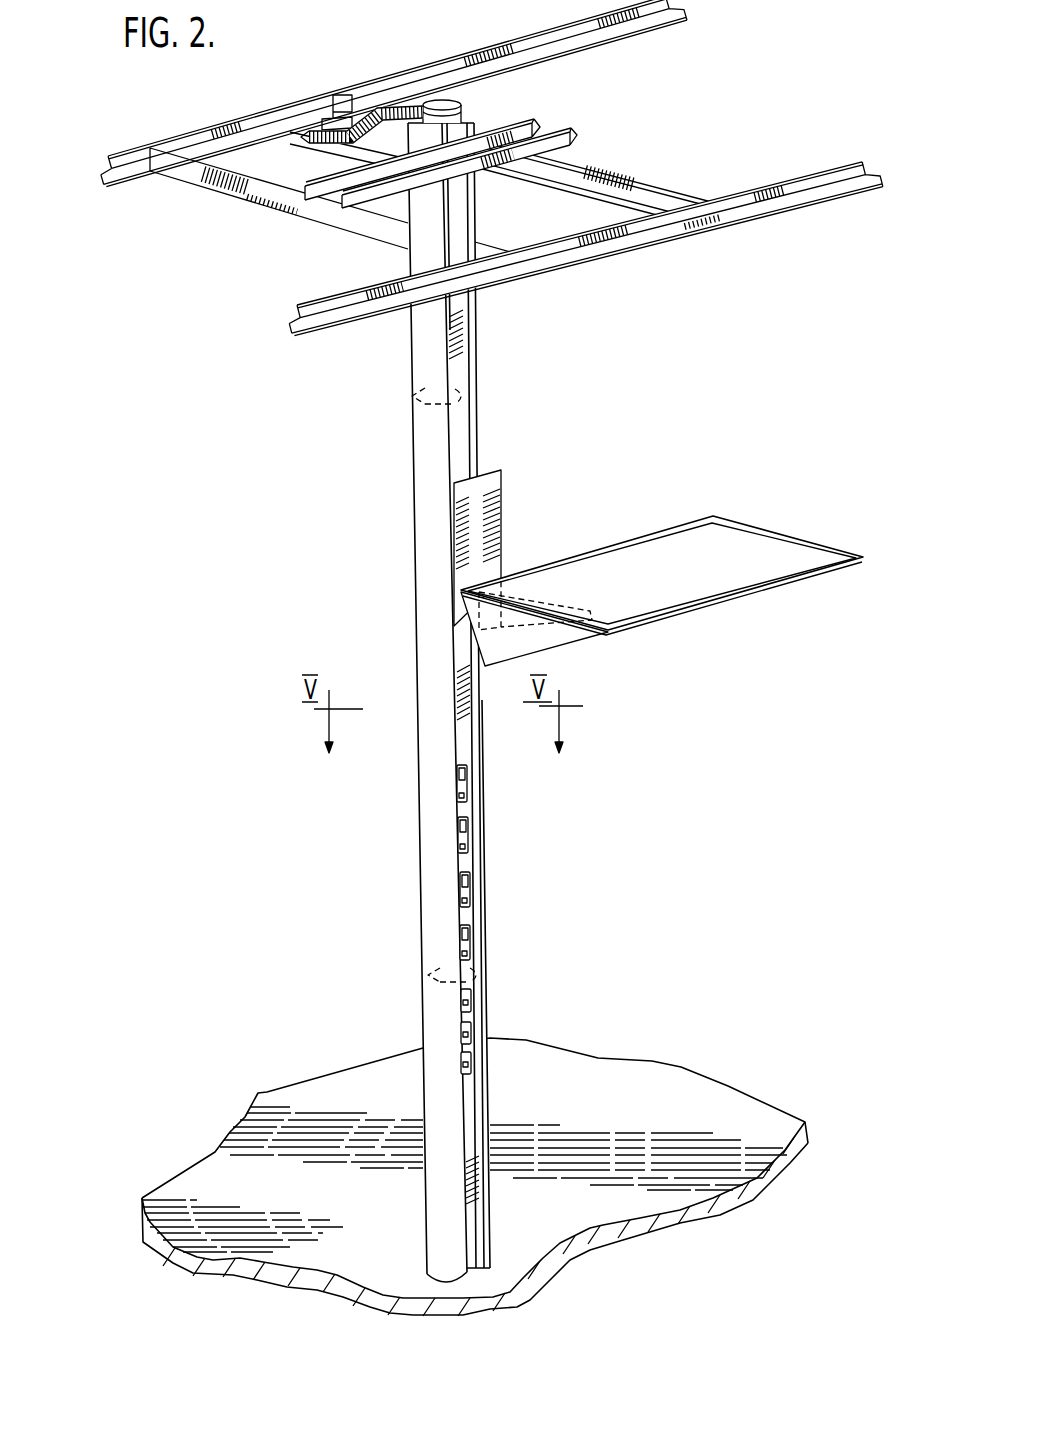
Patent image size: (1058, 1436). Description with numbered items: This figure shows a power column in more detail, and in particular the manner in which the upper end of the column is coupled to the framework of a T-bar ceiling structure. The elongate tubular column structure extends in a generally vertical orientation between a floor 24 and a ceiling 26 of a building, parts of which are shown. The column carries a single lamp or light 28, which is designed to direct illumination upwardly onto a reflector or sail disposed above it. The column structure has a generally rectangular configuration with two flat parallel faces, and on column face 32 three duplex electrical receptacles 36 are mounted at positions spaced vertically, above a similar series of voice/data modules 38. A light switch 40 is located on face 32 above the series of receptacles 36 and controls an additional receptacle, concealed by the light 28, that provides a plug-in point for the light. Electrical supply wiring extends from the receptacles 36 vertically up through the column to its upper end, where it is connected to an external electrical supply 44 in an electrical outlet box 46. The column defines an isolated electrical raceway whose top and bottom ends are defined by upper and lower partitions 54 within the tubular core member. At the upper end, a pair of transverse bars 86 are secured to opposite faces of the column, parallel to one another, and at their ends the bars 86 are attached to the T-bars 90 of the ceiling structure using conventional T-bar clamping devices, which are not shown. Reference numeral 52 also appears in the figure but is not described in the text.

The floor 24 is at (718, 1106).
The ceiling 26 is at (489, 168).
The light 28 is at (746, 610).
The column face 32 is at (461, 651).
The duplex electrical receptacles 36 is at (470, 933).
The voice/data modules 38 is at (461, 1065).
The light switch 40 is at (467, 784).
The external electrical supply 44 is at (356, 102).
The electrical outlet box 46 is at (440, 100).
The upper band section 52 is at (410, 395).
The partitions 54 is at (480, 962).
The transverse bar 86 is at (572, 137).
The T-bars 90 is at (483, 240).